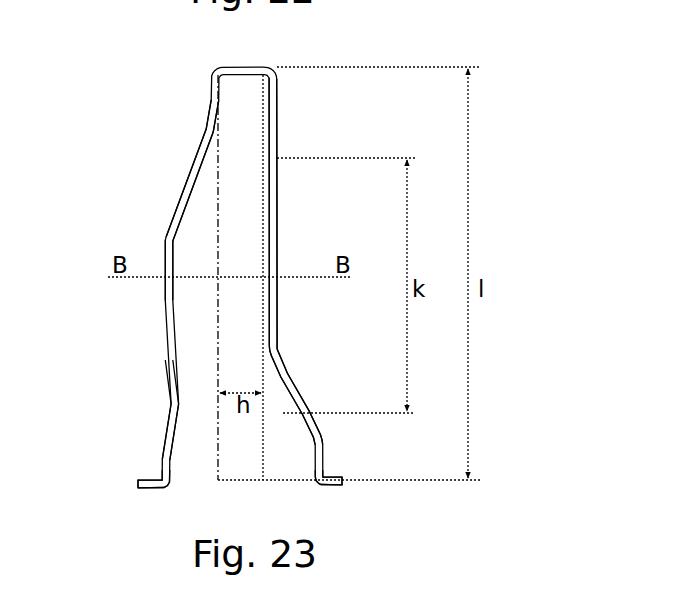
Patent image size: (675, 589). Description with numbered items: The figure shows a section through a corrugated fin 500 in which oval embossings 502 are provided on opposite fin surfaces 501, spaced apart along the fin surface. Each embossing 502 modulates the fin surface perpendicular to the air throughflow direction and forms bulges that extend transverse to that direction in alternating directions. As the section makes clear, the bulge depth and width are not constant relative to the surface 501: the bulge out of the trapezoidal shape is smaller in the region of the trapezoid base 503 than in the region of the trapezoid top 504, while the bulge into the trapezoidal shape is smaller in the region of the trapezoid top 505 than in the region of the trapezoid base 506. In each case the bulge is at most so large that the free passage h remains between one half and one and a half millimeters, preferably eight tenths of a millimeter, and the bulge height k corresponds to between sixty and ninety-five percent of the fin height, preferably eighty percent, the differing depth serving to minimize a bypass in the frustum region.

The corrugated fin 500 is at (411, 54).
The fin surface 501 is at (160, 432).
The oval embossing 502 is at (166, 236).
The trapezoid base 503 is at (176, 437).
The trapezoid top 504 is at (180, 182).
The trapezoid top 505 is at (277, 197).
The trapezoid base 506 is at (292, 376).